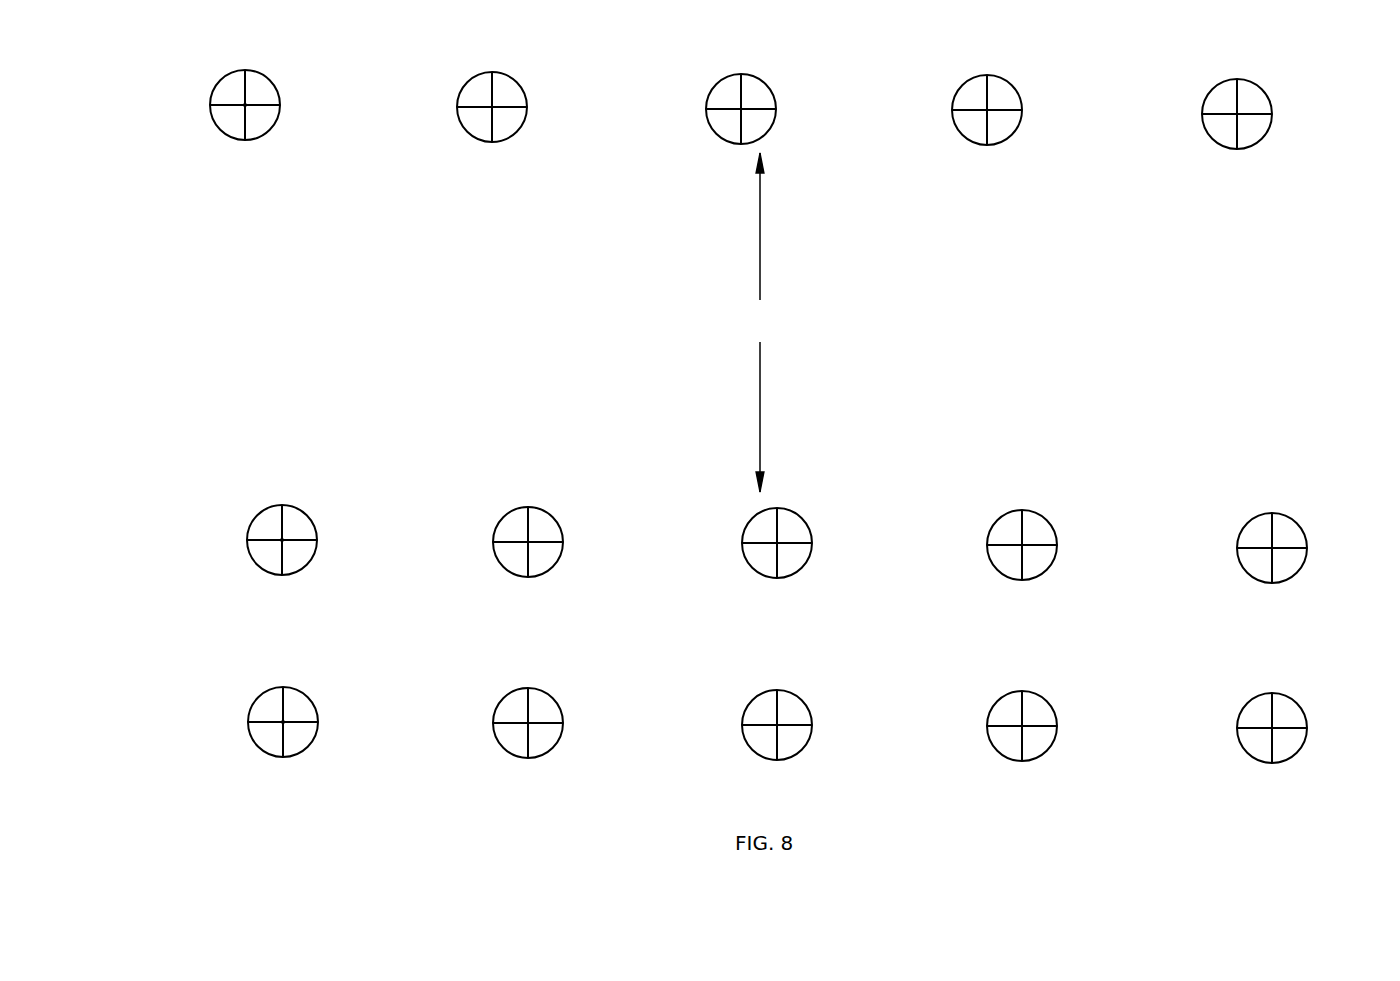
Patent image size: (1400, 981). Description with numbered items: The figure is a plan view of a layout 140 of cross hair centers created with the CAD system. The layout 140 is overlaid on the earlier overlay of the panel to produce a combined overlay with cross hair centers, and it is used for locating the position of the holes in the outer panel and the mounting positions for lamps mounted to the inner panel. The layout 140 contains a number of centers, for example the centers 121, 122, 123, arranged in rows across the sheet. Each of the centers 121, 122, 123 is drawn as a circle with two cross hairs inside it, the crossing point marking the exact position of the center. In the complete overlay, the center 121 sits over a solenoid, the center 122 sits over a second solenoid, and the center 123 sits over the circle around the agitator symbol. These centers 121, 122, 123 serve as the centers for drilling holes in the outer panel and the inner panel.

The center 121 is at (296, 77).
The center 122 is at (333, 694).
The center 123 is at (332, 511).
The layout of centers 140 is at (760, 322).